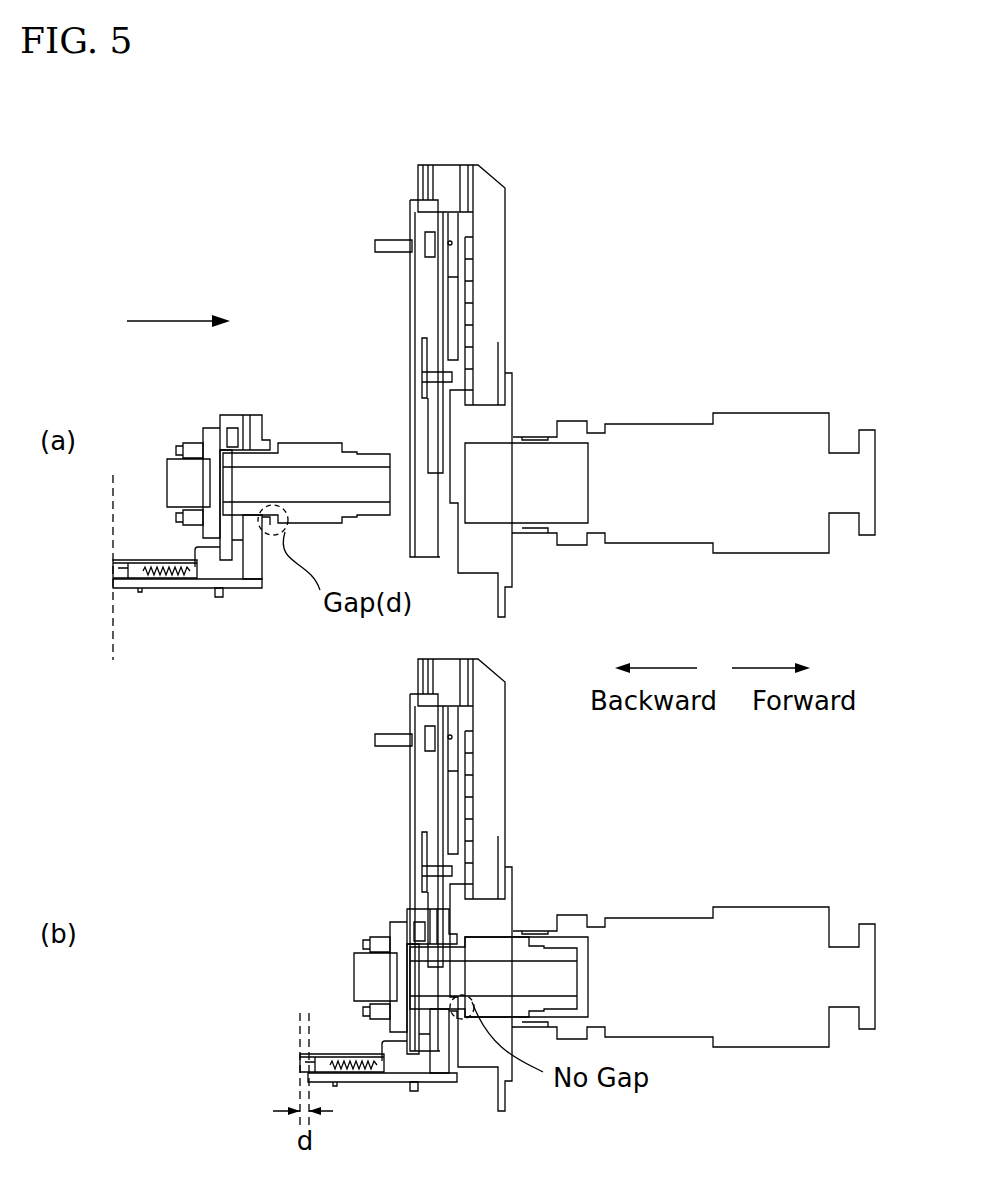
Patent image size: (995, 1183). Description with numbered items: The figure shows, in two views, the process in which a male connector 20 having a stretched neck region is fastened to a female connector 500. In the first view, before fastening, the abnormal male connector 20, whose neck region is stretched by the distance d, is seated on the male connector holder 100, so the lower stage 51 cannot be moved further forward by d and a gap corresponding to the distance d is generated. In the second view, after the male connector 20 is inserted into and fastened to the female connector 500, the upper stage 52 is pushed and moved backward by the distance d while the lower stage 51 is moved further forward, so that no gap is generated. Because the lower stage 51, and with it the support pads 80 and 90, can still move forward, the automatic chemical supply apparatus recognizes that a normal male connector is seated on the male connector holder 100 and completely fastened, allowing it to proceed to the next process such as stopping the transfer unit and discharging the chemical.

The male connector 20 is at (315, 415).
The lower stage 51 is at (153, 588).
The upper stage 52 is at (158, 560).
The support pad 80 is at (257, 563).
The support pad 90 is at (252, 415).
The male connector holder 100 is at (220, 622).
The female connector 500 is at (572, 420).